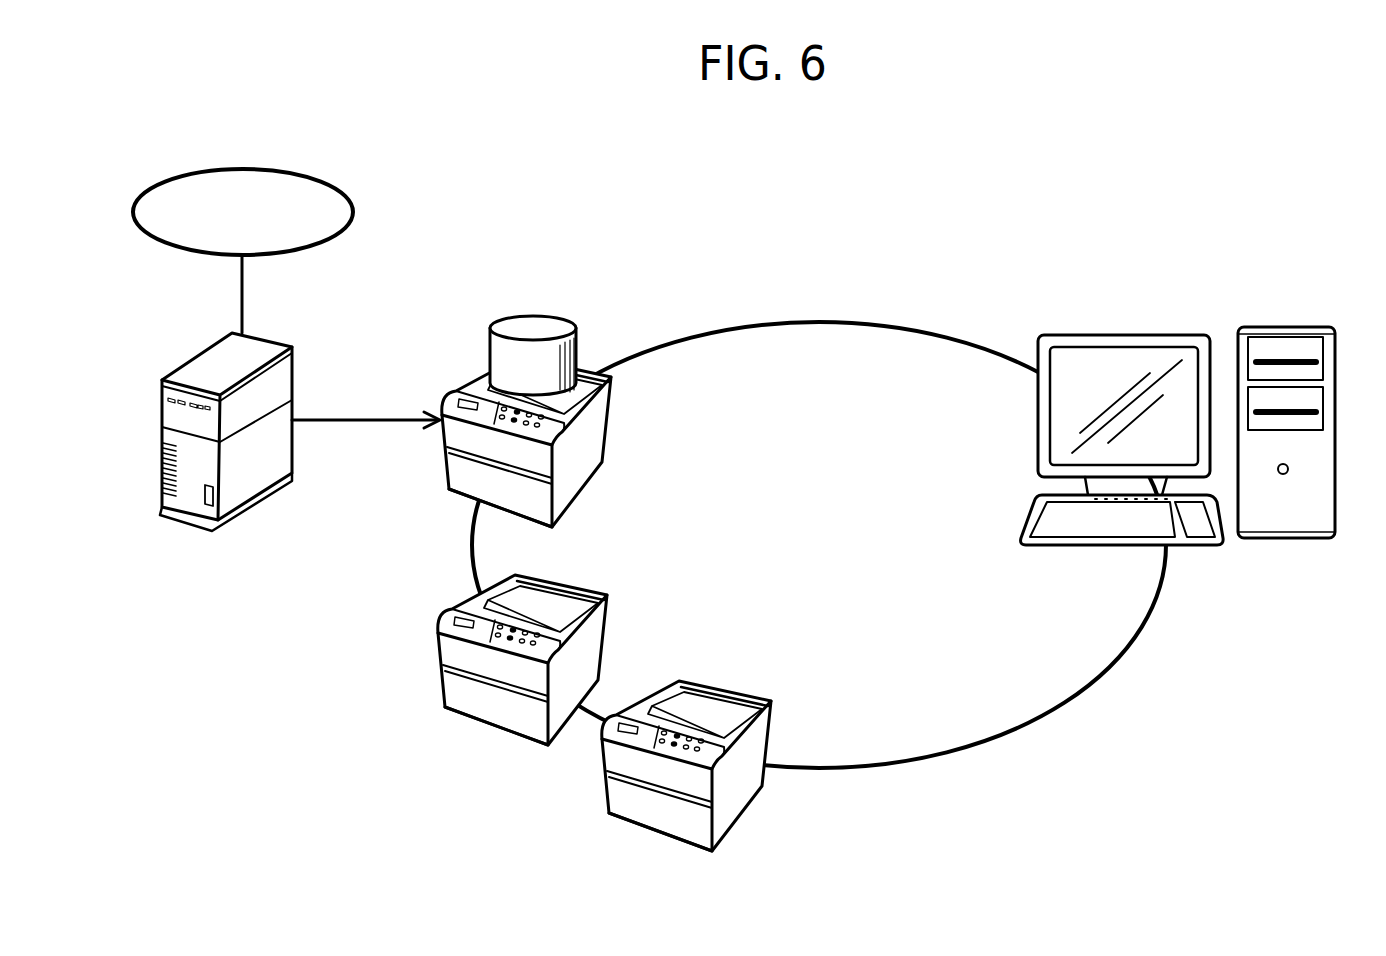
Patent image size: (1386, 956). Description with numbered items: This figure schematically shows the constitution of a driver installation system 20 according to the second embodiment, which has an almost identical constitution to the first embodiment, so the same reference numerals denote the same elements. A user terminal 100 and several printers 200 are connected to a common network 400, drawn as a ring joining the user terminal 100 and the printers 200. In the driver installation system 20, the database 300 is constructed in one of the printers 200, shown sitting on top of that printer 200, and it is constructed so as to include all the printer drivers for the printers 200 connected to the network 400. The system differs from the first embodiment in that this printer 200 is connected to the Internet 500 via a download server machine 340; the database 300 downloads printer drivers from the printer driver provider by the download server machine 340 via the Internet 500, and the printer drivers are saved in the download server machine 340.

The driver installation system 20 is at (973, 208).
The user terminal 100 is at (1125, 335).
The printer 200 is at (583, 375).
The database 300 is at (490, 357).
The download server machine 340 is at (262, 508).
The network 400 is at (1035, 718).
The Internet 500 is at (253, 168).